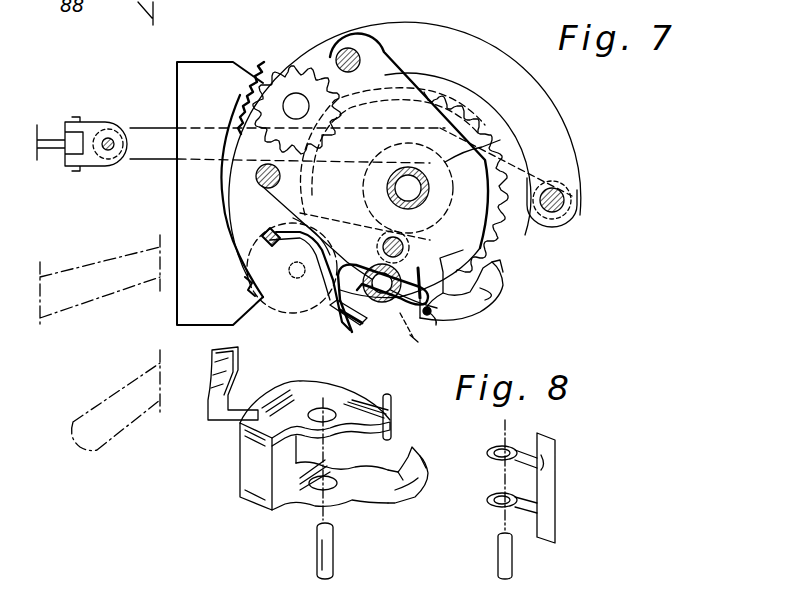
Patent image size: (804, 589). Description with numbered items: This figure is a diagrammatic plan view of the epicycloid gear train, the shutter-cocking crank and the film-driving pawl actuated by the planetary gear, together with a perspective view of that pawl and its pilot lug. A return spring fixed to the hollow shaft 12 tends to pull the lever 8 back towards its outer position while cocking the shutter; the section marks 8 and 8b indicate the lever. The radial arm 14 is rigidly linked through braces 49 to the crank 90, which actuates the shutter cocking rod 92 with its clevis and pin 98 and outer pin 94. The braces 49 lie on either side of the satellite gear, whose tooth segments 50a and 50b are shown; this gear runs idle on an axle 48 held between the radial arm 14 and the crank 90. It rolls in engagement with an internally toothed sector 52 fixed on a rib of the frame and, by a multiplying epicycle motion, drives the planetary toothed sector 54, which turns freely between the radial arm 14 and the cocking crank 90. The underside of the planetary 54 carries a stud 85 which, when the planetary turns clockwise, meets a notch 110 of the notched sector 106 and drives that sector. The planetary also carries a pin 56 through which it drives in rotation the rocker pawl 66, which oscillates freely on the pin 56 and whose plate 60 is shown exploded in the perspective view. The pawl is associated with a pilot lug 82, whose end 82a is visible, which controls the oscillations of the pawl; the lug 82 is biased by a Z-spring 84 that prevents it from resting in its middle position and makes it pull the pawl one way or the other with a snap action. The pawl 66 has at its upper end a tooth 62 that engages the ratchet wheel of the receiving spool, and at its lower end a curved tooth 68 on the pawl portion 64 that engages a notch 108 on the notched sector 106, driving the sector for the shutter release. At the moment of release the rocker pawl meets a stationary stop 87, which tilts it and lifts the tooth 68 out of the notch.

In FIG. 7, the lever 8 is at (92, 272).
In FIG. 7, the section line 8b is at (112, 432).
In FIG. 7, the hollow shaft 12 is at (428, 200).
In FIG. 7, the radial arm 14 is at (385, 53).
In FIG. 7, the axle 48 is at (285, 106).
In FIG. 7, the braces 49 is at (346, 50).
In FIG. 7, the gear tooth segment 50a is at (283, 66).
In FIG. 7, the gear tooth segment 50b is at (282, 298).
In FIG. 7, the internally toothed sector 52 is at (220, 72).
In FIG. 7, the planetary toothed sector 54 is at (462, 115).
In FIG. 7, the pin 56 is at (380, 305).
In FIG. 8, the pin 56 is at (334, 560).
In FIG. 7, the latch lever plate 60 is at (304, 274).
In FIG. 8, the latch lever plate 60 is at (328, 397).
In FIG. 7, the tooth 62 is at (250, 248).
In FIG. 8, the tooth 62 is at (240, 370).
In FIG. 7, the pawl plate 64 is at (480, 315).
In FIG. 8, the pawl plate 64 is at (398, 498).
In FIG. 8, the rocker pawl 66 is at (245, 468).
In FIG. 7, the curved tooth 68 is at (495, 275).
In FIG. 8, the curved tooth 68 is at (416, 452).
In FIG. 7, the pilot lug 82 is at (360, 330).
In FIG. 8, the pilot lug 82 is at (550, 527).
In FIG. 7, the spring end 82a is at (407, 338).
In FIG. 7, the Z-spring 84 is at (337, 316).
In FIG. 7, the stud 85 is at (396, 244).
In FIG. 7, the stationary stop 87 is at (438, 318).
In FIG. 8, the stationary stop 87 is at (393, 404).
In FIG. 7, the crank 90 is at (558, 112).
In FIG. 7, the shutter cocking rod 92 is at (150, 162).
In FIG. 7, the pin 94 is at (575, 196).
In FIG. 7, the clevis pin 98 is at (96, 125).
In FIG. 7, the notched sector 106 is at (364, 192).
In FIG. 7, the notch 108 is at (478, 295).
In FIG. 7, the notch 110 is at (500, 141).